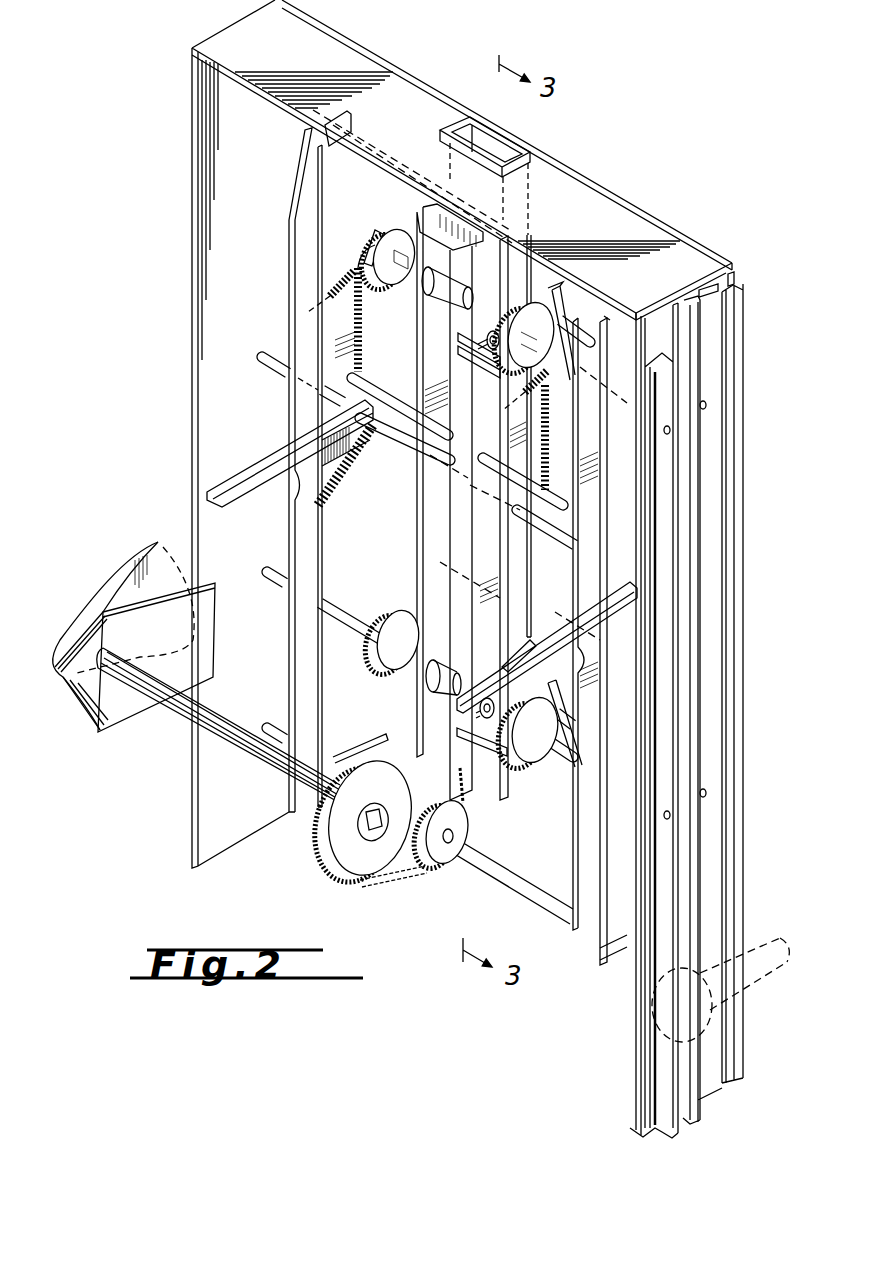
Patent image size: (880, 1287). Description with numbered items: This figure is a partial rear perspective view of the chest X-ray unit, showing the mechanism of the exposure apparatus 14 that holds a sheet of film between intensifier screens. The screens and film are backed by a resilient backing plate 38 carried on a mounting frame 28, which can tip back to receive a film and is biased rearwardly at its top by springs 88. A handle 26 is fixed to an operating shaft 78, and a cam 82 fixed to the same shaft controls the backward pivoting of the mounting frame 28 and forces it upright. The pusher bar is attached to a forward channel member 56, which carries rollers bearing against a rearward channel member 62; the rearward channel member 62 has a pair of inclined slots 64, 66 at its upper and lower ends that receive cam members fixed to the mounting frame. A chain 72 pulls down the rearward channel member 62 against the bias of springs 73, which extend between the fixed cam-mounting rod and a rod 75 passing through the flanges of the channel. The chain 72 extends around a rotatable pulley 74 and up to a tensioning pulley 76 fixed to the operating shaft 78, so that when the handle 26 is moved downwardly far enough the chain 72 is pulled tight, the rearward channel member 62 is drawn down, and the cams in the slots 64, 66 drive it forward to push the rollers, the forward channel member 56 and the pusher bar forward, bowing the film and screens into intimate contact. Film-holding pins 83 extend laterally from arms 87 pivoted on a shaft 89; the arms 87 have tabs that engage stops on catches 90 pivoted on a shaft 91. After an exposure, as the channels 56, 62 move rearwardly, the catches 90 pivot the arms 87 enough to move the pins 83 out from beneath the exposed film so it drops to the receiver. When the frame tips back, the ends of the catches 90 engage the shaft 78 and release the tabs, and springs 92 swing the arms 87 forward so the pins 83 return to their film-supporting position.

The exposure apparatus 14 is at (180, 406).
The handle 26 is at (752, 942).
The mounting frame 28 is at (186, 172).
The resilient backing plate 38 is at (620, 208).
The forward channel member 56 is at (515, 144).
The rearward channel member 62 is at (428, 541).
The inclined slot 64 is at (397, 288).
The inclined slot 66 is at (394, 678).
The chain 72 is at (395, 862).
The springs 73 is at (364, 348).
The rotatable pulley 74 is at (447, 860).
The rod 75 is at (541, 500).
The tensioning pulley 76 is at (356, 877).
The operating shaft 78 is at (180, 709).
The cam 82 is at (122, 572).
The film-holding pins 83 is at (357, 757).
The arms 87 is at (303, 628).
The springs 88 is at (347, 278).
The shaft 89 is at (383, 147).
The catches 90 is at (216, 490).
The shaft 91 is at (281, 373).
The springs 92 is at (360, 463).